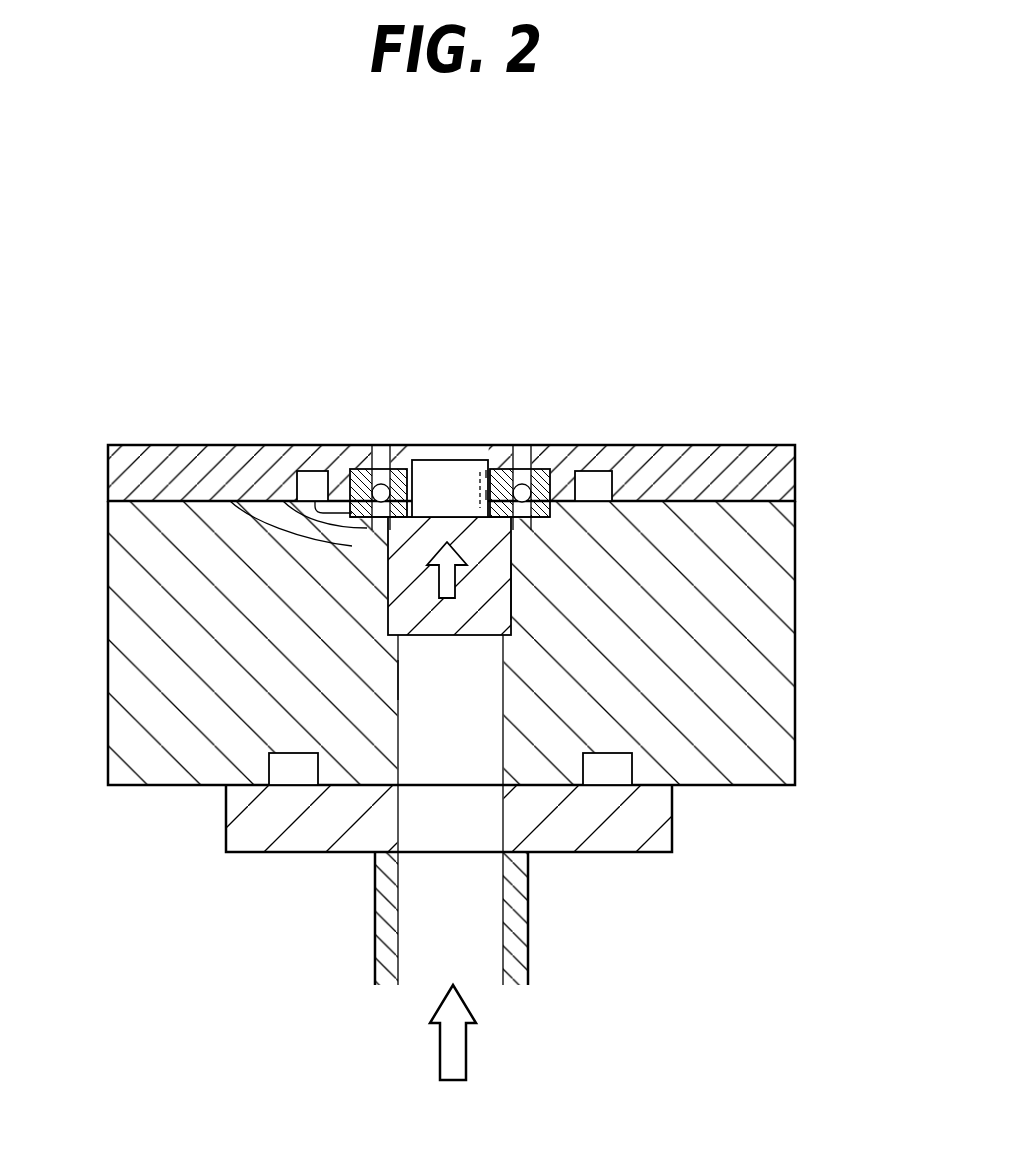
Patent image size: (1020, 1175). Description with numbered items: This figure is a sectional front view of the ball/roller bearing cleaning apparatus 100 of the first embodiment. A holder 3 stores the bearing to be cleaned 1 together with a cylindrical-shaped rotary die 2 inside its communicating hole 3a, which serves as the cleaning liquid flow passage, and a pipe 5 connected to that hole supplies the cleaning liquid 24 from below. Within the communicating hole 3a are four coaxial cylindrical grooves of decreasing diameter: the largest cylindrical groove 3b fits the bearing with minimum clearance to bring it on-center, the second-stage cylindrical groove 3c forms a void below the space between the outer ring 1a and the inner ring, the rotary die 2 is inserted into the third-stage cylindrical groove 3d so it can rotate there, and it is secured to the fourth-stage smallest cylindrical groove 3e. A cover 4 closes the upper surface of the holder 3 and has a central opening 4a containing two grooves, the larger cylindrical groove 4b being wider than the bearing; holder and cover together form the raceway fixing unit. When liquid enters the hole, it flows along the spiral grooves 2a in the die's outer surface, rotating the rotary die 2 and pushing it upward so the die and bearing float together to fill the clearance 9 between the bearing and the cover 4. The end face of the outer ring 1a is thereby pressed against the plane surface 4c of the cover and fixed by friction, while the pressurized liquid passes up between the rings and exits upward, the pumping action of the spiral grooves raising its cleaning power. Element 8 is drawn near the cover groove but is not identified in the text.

The ball/roller bearing cleaning apparatus 100 is at (661, 279).
The bearing to be cleaned 1 is at (496, 407).
The outer ring 1a is at (396, 462).
The cylindrical-shaped rotary die 2 is at (388, 577).
The spiral grooves 2a is at (497, 593).
The holder 3 is at (784, 609).
The communicating hole 3a is at (483, 712).
The largest cylindrical groove 3b is at (321, 490).
The second-stage cylindrical groove 3c is at (385, 530).
The third-stage cylindrical groove 3d is at (387, 548).
The fourth-stage smallest cylindrical groove 3e is at (397, 674).
The cover 4 is at (796, 479).
The opening 4a is at (502, 432).
The larger cylindrical groove 4b is at (553, 492).
The plane surface 4c is at (520, 466).
The pipe 5 is at (529, 920).
The O-ring 8 is at (546, 522).
The clearance 9 is at (505, 468).
The cleaning liquid 24 is at (466, 1043).